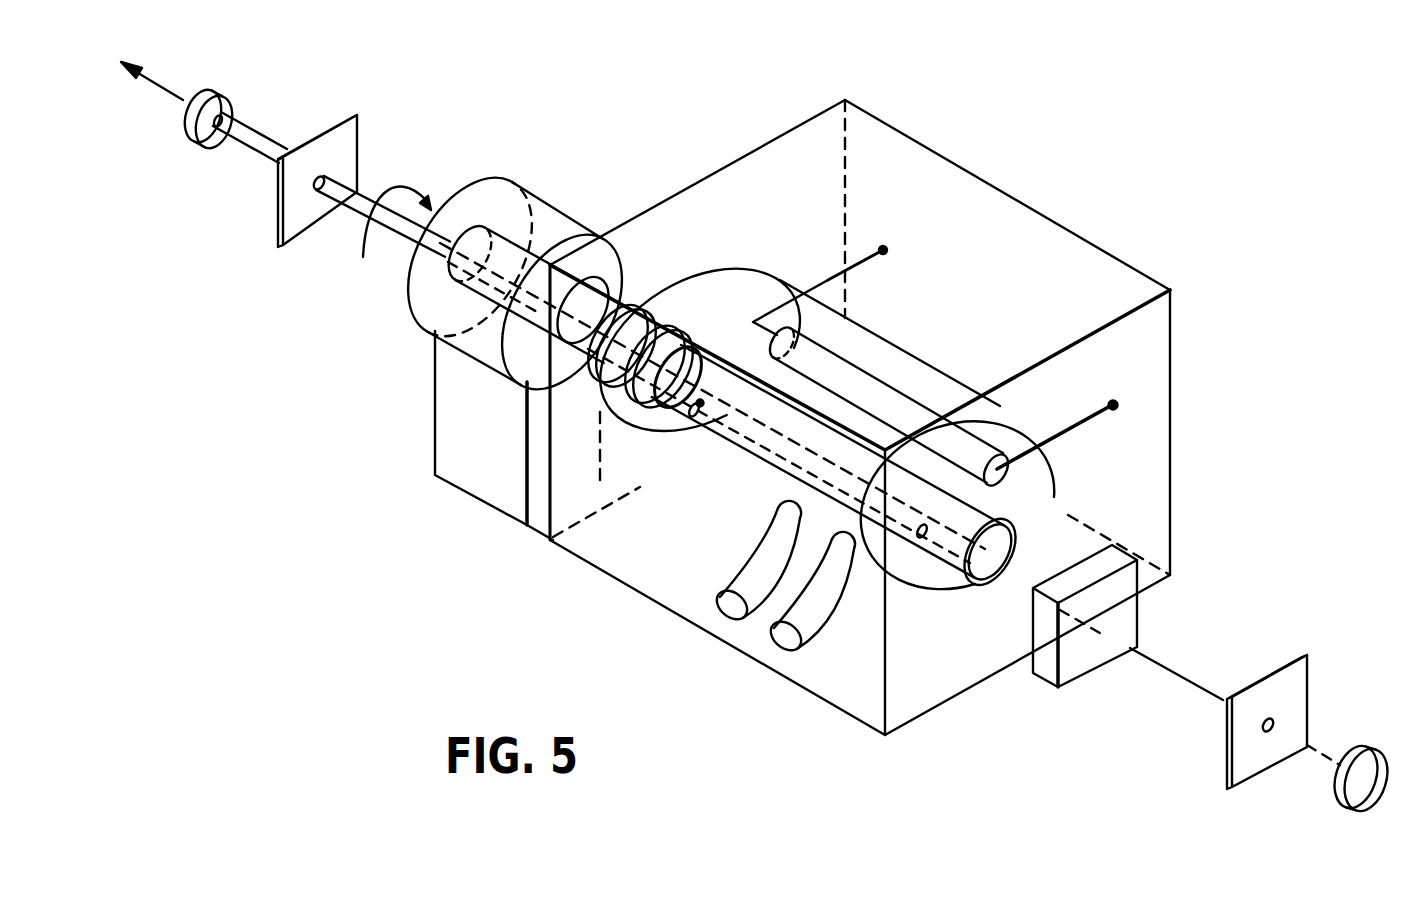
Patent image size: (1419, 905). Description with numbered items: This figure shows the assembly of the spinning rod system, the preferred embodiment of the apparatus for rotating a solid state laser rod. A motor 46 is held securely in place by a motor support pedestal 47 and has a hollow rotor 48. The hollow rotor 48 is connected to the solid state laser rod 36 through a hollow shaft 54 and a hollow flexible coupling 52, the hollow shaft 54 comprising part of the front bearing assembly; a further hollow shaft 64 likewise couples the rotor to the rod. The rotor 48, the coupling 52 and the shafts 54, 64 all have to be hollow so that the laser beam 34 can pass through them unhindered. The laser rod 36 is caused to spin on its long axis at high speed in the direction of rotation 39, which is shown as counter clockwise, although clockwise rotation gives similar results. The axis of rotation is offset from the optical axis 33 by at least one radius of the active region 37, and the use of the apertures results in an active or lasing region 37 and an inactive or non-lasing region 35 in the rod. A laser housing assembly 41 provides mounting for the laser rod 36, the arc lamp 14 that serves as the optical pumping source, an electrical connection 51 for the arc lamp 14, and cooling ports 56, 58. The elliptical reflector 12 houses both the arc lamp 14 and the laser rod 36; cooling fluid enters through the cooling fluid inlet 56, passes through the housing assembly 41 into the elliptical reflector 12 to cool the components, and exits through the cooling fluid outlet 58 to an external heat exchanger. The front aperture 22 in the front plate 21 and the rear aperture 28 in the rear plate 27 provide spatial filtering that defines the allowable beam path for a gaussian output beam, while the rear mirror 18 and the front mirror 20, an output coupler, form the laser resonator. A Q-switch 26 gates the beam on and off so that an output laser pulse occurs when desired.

The elliptical reflector 12 is at (1060, 462).
The arc lamp 14 is at (870, 368).
The rear mirror 18 is at (1375, 763).
The front mirror 20 is at (213, 142).
The front plate 21 is at (360, 115).
The front aperture 22 is at (321, 195).
The Q-switch 26 is at (1128, 613).
The rear plate 27 is at (1280, 672).
The rear aperture 28 is at (1278, 722).
The optical axis 33 is at (700, 406).
The laser beam 34 is at (172, 95).
The inactive region 35 is at (1046, 498).
The solid state laser rod 36 is at (770, 467).
The active region 37 is at (696, 416).
The direction of rotation 39 is at (397, 195).
The laser housing assembly 41 is at (1000, 190).
The motor 46 is at (410, 300).
The motor support pedestal 47 is at (445, 418).
The hollow rotor 48 is at (548, 255).
The electrical connection 51 is at (880, 249).
The hollow flexible coupling 52 is at (630, 303).
The hollow shaft 54 is at (702, 355).
The cooling fluid inlet 56 is at (782, 645).
The cooling fluid outlet 58 is at (723, 607).
The hollow shaft 64 is at (962, 570).